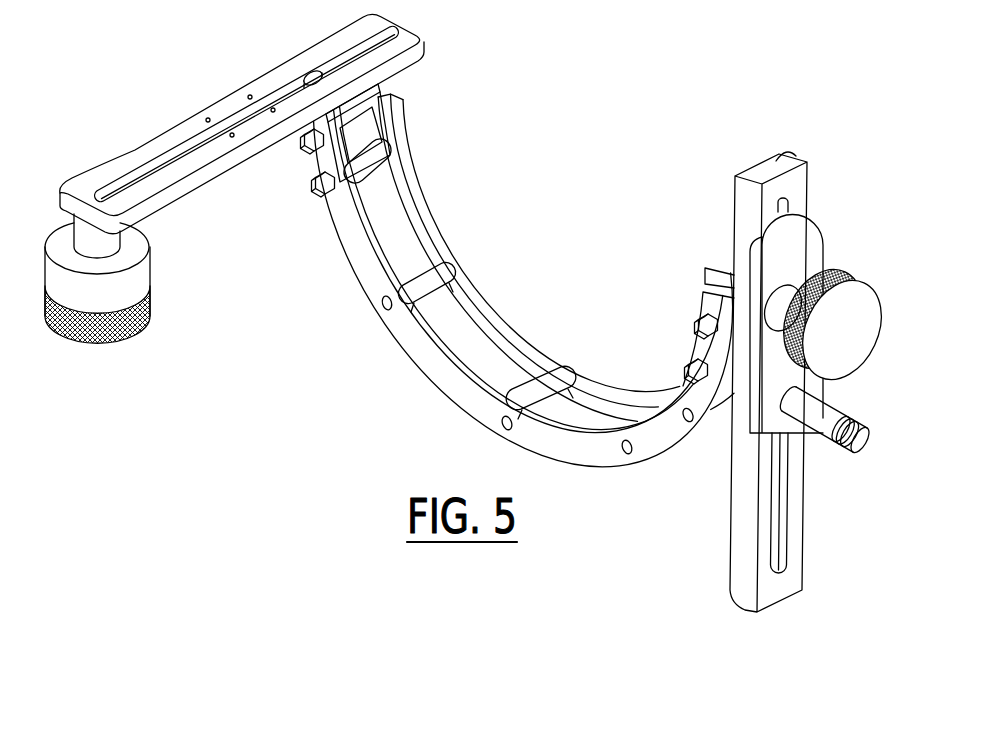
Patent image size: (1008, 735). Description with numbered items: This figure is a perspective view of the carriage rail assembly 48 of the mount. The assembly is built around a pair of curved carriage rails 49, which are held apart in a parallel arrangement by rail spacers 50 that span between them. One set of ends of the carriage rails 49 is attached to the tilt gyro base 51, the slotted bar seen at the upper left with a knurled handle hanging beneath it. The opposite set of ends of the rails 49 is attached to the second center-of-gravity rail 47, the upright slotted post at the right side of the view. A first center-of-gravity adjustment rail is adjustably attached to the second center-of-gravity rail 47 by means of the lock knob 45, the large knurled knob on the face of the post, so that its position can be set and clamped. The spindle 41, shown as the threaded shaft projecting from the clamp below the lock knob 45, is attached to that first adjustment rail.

The spindle 41 is at (857, 440).
The lock knob 45 is at (830, 342).
The second center-of-gravity rail 47 is at (790, 182).
The carriage rail assembly 48 is at (518, 242).
The carriage rails 49 is at (433, 370).
The rail spacers 50 is at (547, 397).
The tilt gyro base 51 is at (182, 123).